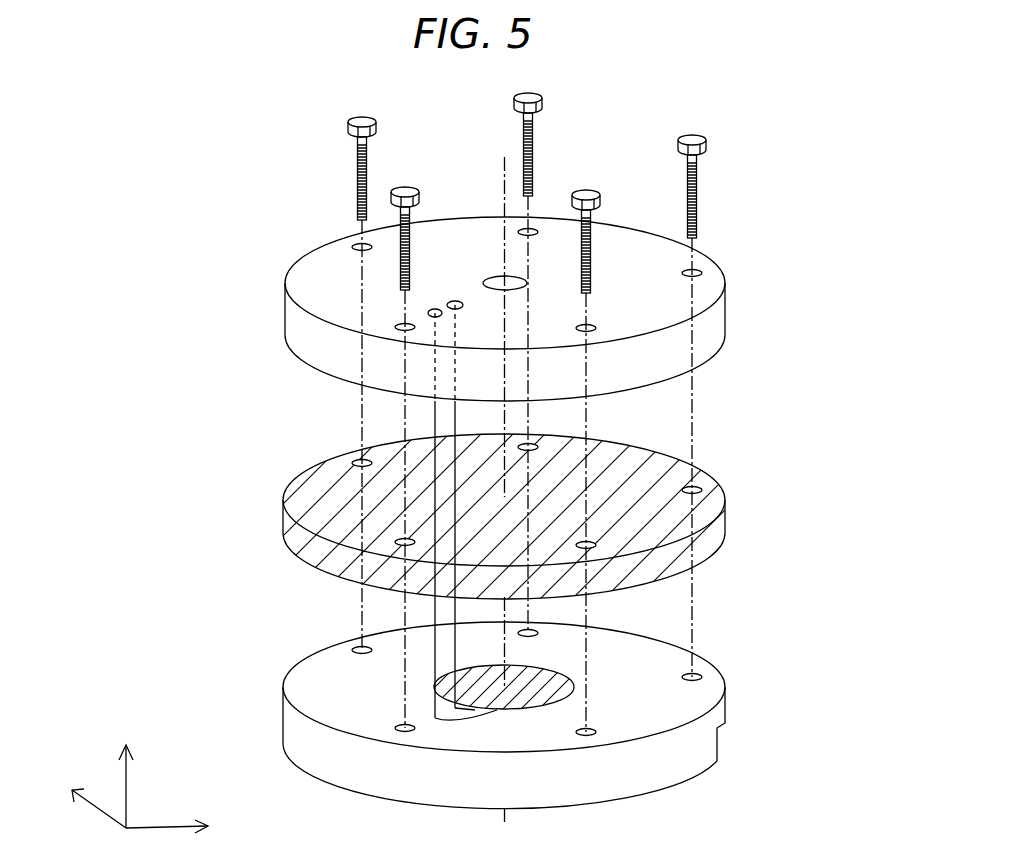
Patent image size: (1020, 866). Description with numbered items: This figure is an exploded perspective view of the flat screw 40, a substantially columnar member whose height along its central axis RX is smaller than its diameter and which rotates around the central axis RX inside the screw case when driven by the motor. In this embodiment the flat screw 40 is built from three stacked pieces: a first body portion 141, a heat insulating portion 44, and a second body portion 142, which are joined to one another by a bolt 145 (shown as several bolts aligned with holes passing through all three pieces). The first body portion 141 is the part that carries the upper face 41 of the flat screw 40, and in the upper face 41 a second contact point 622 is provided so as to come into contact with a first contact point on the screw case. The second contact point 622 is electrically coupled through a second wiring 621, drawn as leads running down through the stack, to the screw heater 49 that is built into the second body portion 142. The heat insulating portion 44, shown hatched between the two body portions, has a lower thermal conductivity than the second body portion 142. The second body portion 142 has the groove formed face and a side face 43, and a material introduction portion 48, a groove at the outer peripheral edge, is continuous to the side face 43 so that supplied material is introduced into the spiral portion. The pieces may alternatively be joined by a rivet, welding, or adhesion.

The flat screw 40 is at (199, 187).
The upper face 41 is at (680, 305).
The first body portion 141 is at (285, 328).
The side face 43 is at (680, 762).
The second body portion 142 is at (285, 725).
The heat insulating portion 44 is at (285, 520).
The material introduction portion 48 is at (723, 743).
The screw heater 49 is at (558, 683).
The bolt 145 is at (702, 135).
The second wiring 621 is at (497, 707).
The second contact point 622 is at (448, 303).
The central axis RX is at (502, 173).